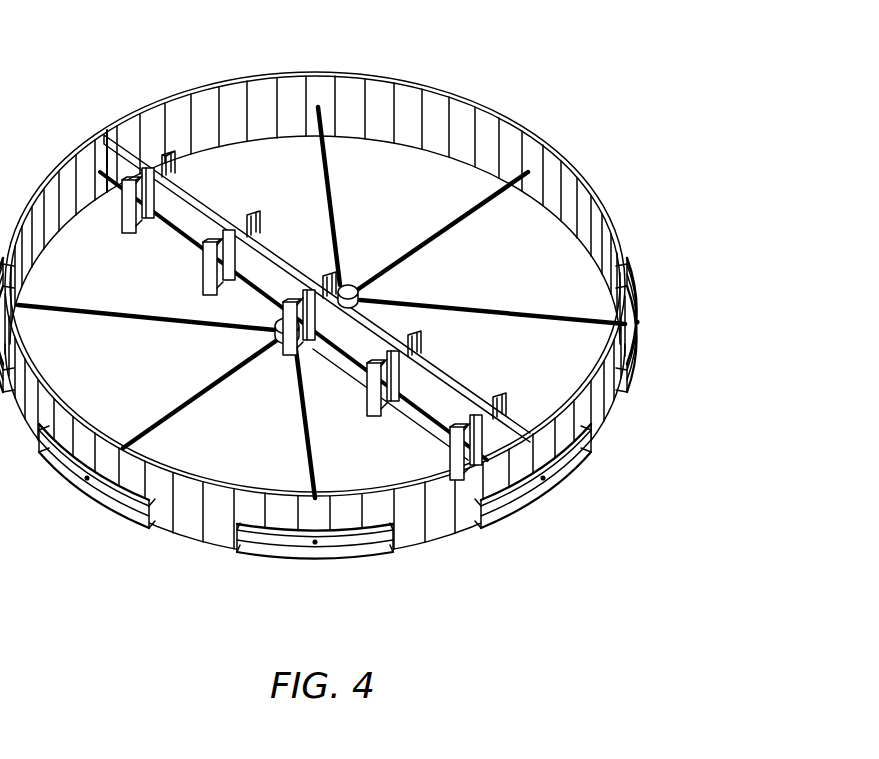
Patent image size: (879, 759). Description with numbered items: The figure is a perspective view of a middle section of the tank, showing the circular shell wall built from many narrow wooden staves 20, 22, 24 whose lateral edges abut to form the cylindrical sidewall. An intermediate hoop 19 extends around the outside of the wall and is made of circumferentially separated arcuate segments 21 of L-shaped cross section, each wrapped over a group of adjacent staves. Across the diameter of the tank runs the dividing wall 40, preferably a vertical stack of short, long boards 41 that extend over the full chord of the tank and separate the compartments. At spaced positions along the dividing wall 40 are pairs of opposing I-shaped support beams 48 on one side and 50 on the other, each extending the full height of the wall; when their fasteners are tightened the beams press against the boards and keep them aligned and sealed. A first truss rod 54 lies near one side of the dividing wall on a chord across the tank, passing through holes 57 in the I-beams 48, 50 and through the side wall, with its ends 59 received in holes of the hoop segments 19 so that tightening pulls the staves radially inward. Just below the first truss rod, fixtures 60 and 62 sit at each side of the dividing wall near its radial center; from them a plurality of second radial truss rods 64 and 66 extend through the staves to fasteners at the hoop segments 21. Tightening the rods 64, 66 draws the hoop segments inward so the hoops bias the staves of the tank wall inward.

The intermediate hoop 19 is at (331, 442).
The stave 20 is at (315, 285).
The arcuate hoop segment 21 is at (280, 545).
The stave 22 is at (470, 100).
The stave 24 is at (443, 90).
The dividing wall 40 is at (452, 373).
The board of the dividing wall 41 is at (118, 160).
The I-shaped support beam 48 is at (203, 277).
The I-shaped support beam 50 is at (252, 217).
The first truss rod 54 is at (187, 228).
The hole 57 is at (235, 253).
The end of first truss rod 59 is at (522, 495).
The fixture 60 is at (295, 343).
The fixture 62 is at (350, 280).
The second radial truss rod 64 is at (200, 400).
The second radial truss rod 66 is at (445, 236).